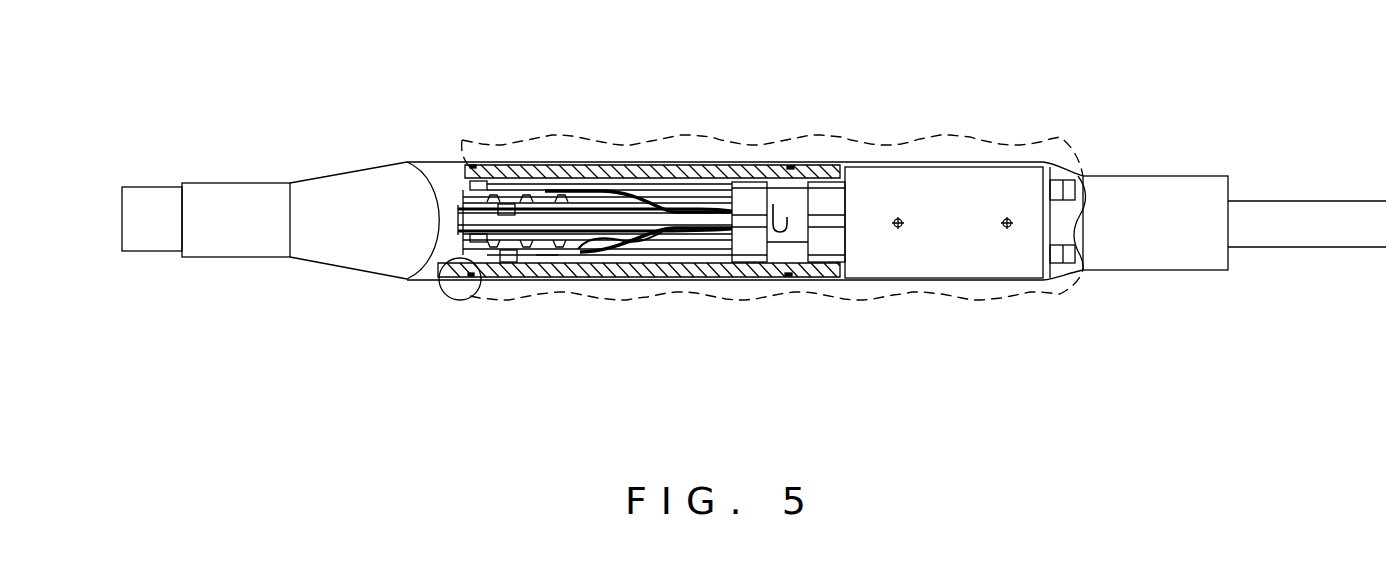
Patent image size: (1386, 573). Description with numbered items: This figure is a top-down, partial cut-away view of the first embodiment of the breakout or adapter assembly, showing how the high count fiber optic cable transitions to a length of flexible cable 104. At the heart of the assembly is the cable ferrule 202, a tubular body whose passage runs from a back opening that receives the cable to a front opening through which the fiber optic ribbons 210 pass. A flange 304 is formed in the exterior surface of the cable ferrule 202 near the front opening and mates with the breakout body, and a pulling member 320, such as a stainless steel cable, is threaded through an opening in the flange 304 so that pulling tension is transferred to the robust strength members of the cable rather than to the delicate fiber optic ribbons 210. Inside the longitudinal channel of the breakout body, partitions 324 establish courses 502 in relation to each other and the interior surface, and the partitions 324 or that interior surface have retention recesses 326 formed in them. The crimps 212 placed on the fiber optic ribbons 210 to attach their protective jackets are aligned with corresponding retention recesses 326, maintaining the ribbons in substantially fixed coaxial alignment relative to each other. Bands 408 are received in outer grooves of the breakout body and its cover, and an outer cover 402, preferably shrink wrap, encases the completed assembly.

The flexible cable 104 is at (140, 243).
The cable ferrule 202 is at (990, 207).
The fiber optic ribbons 210 is at (635, 192).
The crimps 212 is at (505, 263).
The flange 304 is at (747, 248).
The pulling member 320 is at (775, 200).
The partitions 324 is at (566, 198).
The retention recesses 326 is at (545, 263).
The outer cover 402 is at (1197, 230).
The band 408 is at (472, 165).
The courses 502 is at (613, 243).